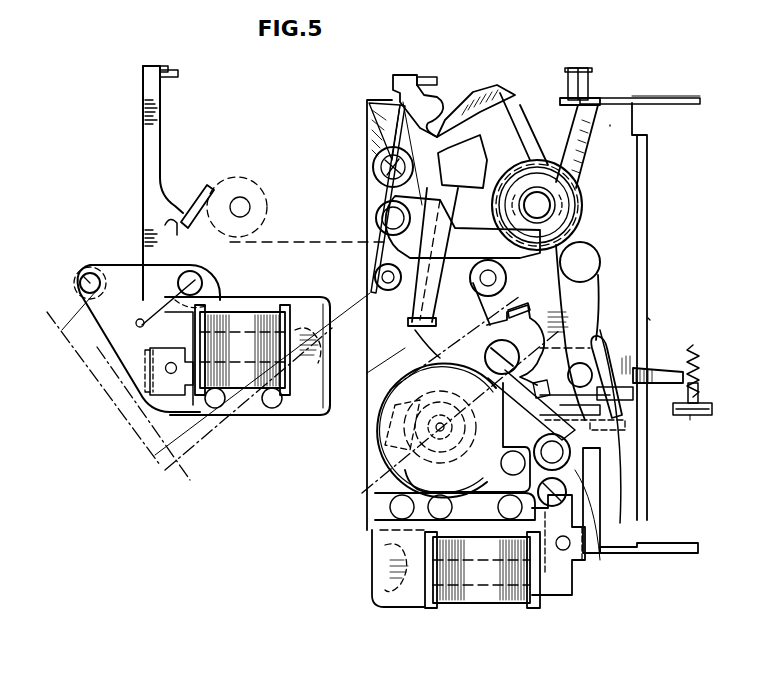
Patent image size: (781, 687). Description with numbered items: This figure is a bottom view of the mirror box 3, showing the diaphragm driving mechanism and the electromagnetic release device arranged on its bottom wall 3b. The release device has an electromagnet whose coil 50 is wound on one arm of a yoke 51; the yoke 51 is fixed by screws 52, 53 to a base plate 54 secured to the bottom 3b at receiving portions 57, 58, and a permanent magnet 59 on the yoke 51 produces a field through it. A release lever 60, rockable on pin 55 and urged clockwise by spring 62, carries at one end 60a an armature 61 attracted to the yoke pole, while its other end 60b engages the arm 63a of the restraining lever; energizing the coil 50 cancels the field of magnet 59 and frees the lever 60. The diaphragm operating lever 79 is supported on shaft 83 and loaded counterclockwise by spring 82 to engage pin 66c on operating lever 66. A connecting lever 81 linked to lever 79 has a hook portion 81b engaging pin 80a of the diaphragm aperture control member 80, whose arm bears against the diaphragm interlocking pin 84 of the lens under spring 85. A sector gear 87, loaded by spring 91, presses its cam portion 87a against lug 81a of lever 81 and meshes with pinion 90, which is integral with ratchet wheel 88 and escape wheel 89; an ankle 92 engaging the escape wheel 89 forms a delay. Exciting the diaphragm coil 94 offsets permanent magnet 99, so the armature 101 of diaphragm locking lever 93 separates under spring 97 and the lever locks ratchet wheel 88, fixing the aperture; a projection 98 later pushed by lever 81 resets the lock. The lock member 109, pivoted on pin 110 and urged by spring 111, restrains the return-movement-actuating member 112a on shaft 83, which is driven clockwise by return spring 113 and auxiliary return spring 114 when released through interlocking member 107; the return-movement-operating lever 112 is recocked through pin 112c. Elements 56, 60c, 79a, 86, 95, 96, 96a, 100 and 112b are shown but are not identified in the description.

The mirror box 3 is at (648, 200).
The bottom wall of the mirror box 3b is at (625, 150).
The electromagnetic coil 50 is at (248, 390).
The yoke 51 is at (292, 395).
The screw 52 is at (215, 409).
The screw 53 is at (268, 409).
The base plate 54 is at (112, 396).
The pin 55 is at (203, 282).
The pivot pin 56 is at (78, 283).
The receiving portion 57 is at (507, 278).
The receiving portion 58 is at (375, 277).
The permanent magnet 59 is at (302, 419).
The release lever 60 is at (143, 200).
The end of release lever 60a is at (160, 412).
The end of release lever 60b is at (152, 70).
The lever tab 60c is at (200, 196).
The armature 61 is at (155, 455).
The spring 62 is at (140, 270).
The arm of restraining lever 63a is at (180, 74).
The operating lever 66 is at (578, 66).
The pin of operating lever 66c is at (592, 80).
The diaphragm operating lever 79 is at (645, 108).
The plate edge 79a is at (602, 98).
The diaphragm aperture control member 80 is at (652, 370).
The pin 80a is at (713, 410).
The connecting lever 81 is at (600, 330).
The lug of connecting lever 81a is at (620, 402).
The hook portion of connecting lever 81b is at (625, 418).
The spring 82 is at (262, 391).
The shaft 83 is at (245, 200).
The diaphragm interlocking pin 84 is at (700, 418).
The spring 85 is at (700, 355).
The hook 86 is at (598, 340).
The sector gear 87 is at (430, 330).
The cam portion of sector gear 87a is at (700, 392).
The ratchet wheel 88 is at (410, 372).
The escape wheel 89 is at (390, 415).
The pinion 90 is at (385, 447).
The spring 91 is at (650, 322).
The ankle 92 is at (380, 480).
The diaphragm locking lever 93 is at (592, 530).
The electromagnetic coil for diaphragm 94 is at (480, 604).
The screw 95 is at (567, 496).
The plate 96 is at (660, 548).
The strap 96a is at (622, 470).
The spring 97 is at (570, 456).
The projection 98 is at (610, 500).
The permanent magnet 99 is at (405, 602).
The body 100 is at (372, 578).
The armature 101 is at (560, 600).
The interlocking member 107 is at (393, 78).
The lock member 109 is at (442, 100).
The pin 110 is at (373, 167).
The spring 111 is at (380, 118).
The return-movement-operating lever 112 is at (508, 142).
The return-movement-actuating member 112a is at (488, 95).
The circle 112b is at (237, 177).
The pin 112c is at (376, 218).
The return spring 113 is at (590, 280).
The auxiliary return spring 114 is at (310, 241).